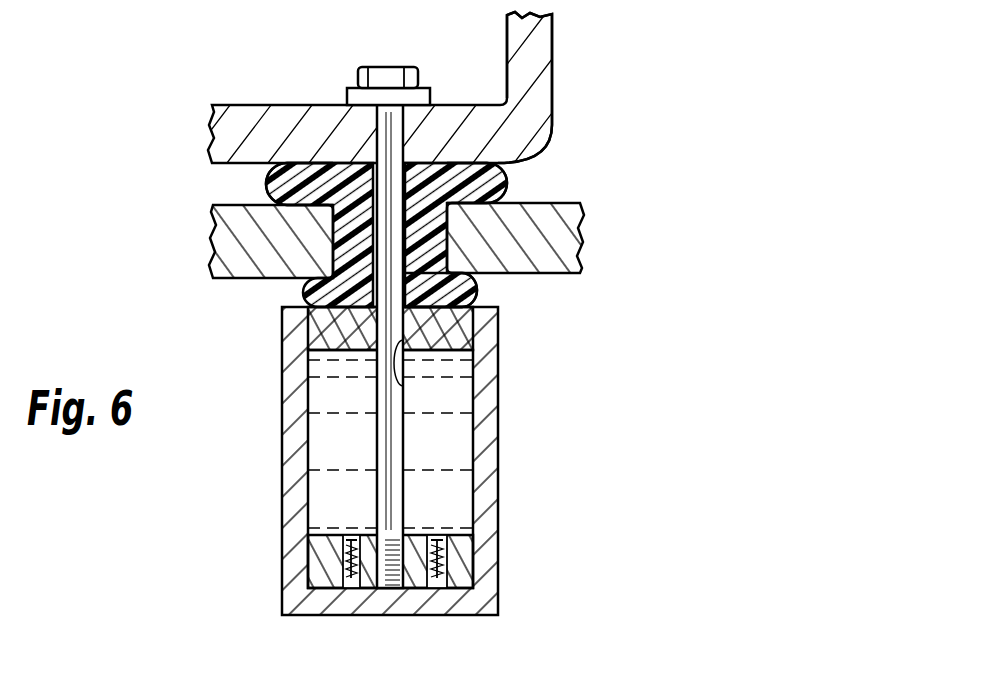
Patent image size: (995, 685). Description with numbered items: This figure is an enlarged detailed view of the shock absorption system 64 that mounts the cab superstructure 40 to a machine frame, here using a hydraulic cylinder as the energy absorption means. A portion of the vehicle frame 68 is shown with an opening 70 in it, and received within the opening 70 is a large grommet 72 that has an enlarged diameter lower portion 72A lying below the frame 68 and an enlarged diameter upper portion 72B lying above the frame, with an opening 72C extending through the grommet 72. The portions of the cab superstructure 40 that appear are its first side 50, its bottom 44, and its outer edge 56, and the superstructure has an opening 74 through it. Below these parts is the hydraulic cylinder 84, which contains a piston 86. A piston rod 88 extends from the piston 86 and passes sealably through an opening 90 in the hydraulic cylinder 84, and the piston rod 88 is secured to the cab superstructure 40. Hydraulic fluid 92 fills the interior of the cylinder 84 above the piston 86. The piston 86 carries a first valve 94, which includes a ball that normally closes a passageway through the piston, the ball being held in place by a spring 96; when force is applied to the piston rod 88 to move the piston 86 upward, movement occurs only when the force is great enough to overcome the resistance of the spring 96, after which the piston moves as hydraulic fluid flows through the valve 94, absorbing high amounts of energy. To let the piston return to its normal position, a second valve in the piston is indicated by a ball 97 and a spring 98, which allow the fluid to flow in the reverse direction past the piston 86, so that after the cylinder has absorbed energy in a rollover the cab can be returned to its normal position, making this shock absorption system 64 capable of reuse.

The cab superstructure 40 is at (530, 45).
The first side 50 is at (552, 80).
The outer edge 56 is at (535, 150).
The bottom 44 is at (256, 163).
The opening 74 is at (377, 130).
The opening 70 is at (497, 183).
The grommet 72 is at (333, 253).
The enlarged diameter lower portion 72A is at (462, 306).
The enlarged diameter upper portion 72B is at (280, 186).
The opening 72C is at (432, 297).
The vehicle frame 68 is at (570, 208).
The shock absorption system 64 is at (622, 330).
The piston rod 88 is at (397, 445).
The opening 90 is at (403, 386).
The hydraulic fluid 92 is at (322, 457).
The hydraulic cylinder 84 is at (485, 493).
The piston 86 is at (470, 550).
The first valve 94 is at (335, 555).
The spring 96 is at (375, 588).
The ball 97 is at (417, 572).
The spring 98 is at (417, 588).